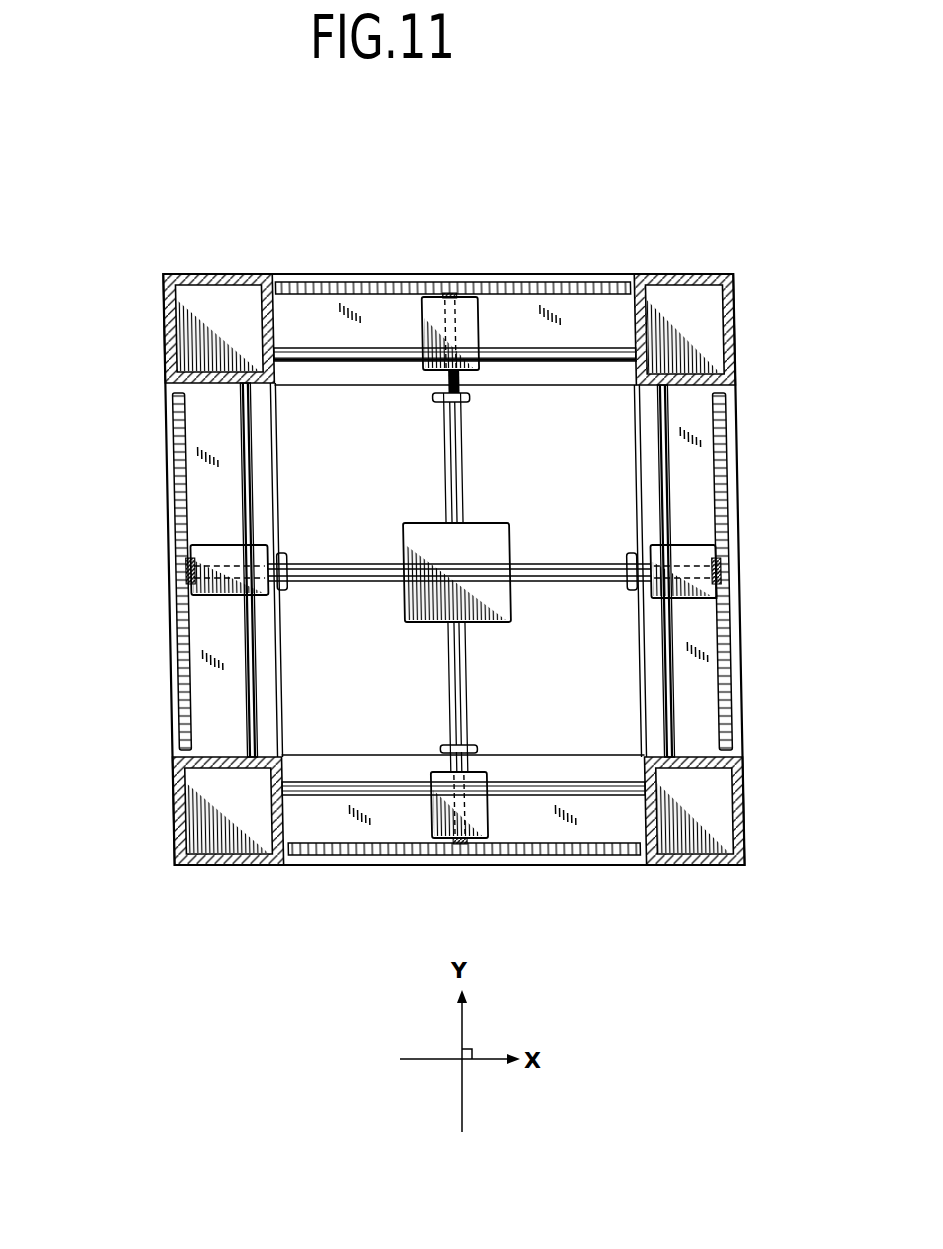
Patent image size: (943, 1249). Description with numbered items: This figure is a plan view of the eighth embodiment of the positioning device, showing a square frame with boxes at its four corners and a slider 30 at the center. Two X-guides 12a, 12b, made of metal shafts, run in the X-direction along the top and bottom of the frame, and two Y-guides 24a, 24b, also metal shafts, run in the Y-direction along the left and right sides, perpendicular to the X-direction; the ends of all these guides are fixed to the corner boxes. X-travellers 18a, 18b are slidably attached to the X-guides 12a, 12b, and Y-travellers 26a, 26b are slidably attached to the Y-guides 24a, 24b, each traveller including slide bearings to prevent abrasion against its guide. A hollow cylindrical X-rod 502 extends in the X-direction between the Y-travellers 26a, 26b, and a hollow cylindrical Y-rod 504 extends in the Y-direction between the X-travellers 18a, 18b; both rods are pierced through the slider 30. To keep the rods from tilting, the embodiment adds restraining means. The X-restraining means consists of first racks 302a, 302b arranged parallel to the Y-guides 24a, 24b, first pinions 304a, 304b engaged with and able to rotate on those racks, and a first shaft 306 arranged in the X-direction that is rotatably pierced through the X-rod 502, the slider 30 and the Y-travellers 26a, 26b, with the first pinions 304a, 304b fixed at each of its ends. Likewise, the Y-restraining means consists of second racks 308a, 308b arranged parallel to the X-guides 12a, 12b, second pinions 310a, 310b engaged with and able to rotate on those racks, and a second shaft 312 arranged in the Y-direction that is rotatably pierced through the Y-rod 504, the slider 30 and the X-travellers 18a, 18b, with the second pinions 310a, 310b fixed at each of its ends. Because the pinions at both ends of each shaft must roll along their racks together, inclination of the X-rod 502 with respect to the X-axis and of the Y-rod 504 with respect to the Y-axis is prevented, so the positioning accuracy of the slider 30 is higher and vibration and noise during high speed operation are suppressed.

The X-guide 12a is at (345, 785).
The X-guide 12b is at (298, 357).
The X-traveller 18a is at (487, 812).
The X-traveller 18b is at (468, 328).
The Y-guide 24a is at (673, 718).
The Y-guide 24b is at (242, 716).
The Y-traveller 26a is at (683, 552).
The Y-traveller 26b is at (221, 553).
The slider 30 is at (490, 545).
The first rack 302a is at (725, 413).
The first rack 302b is at (183, 692).
The first pinion 304a is at (726, 568).
The first pinion 304b is at (178, 572).
The first shaft 306 is at (688, 597).
The second rack 308a is at (316, 862).
The second rack 308b is at (366, 285).
The second pinion 310a is at (455, 862).
The second pinion 310b is at (453, 291).
The second shaft 312 is at (462, 788).
The X-rod 502 is at (573, 570).
The Y-rod 504 is at (448, 463).